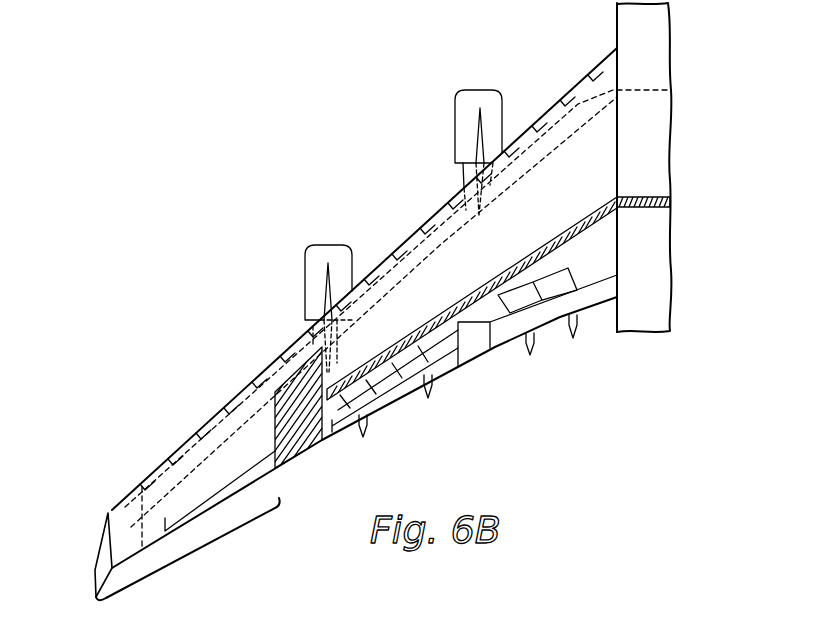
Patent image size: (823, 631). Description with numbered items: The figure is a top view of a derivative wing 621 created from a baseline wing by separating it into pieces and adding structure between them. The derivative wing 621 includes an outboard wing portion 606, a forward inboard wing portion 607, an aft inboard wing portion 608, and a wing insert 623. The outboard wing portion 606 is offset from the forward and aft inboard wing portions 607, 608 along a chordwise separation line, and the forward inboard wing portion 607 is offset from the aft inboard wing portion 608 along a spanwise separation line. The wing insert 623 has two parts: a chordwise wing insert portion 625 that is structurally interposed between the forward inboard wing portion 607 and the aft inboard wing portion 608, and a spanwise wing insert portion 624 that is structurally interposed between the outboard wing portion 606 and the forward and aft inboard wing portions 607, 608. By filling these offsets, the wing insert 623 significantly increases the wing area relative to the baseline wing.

The outboard wing portion 606 is at (187, 559).
The forward inboard wing portion 607 is at (600, 142).
The aft inboard wing portion 608 is at (600, 265).
The derivative wing 621 is at (113, 510).
The wing insert 623 is at (268, 343).
The spanwise wing insert portion 624 is at (290, 412).
The chordwise wing insert portion 625 is at (583, 210).